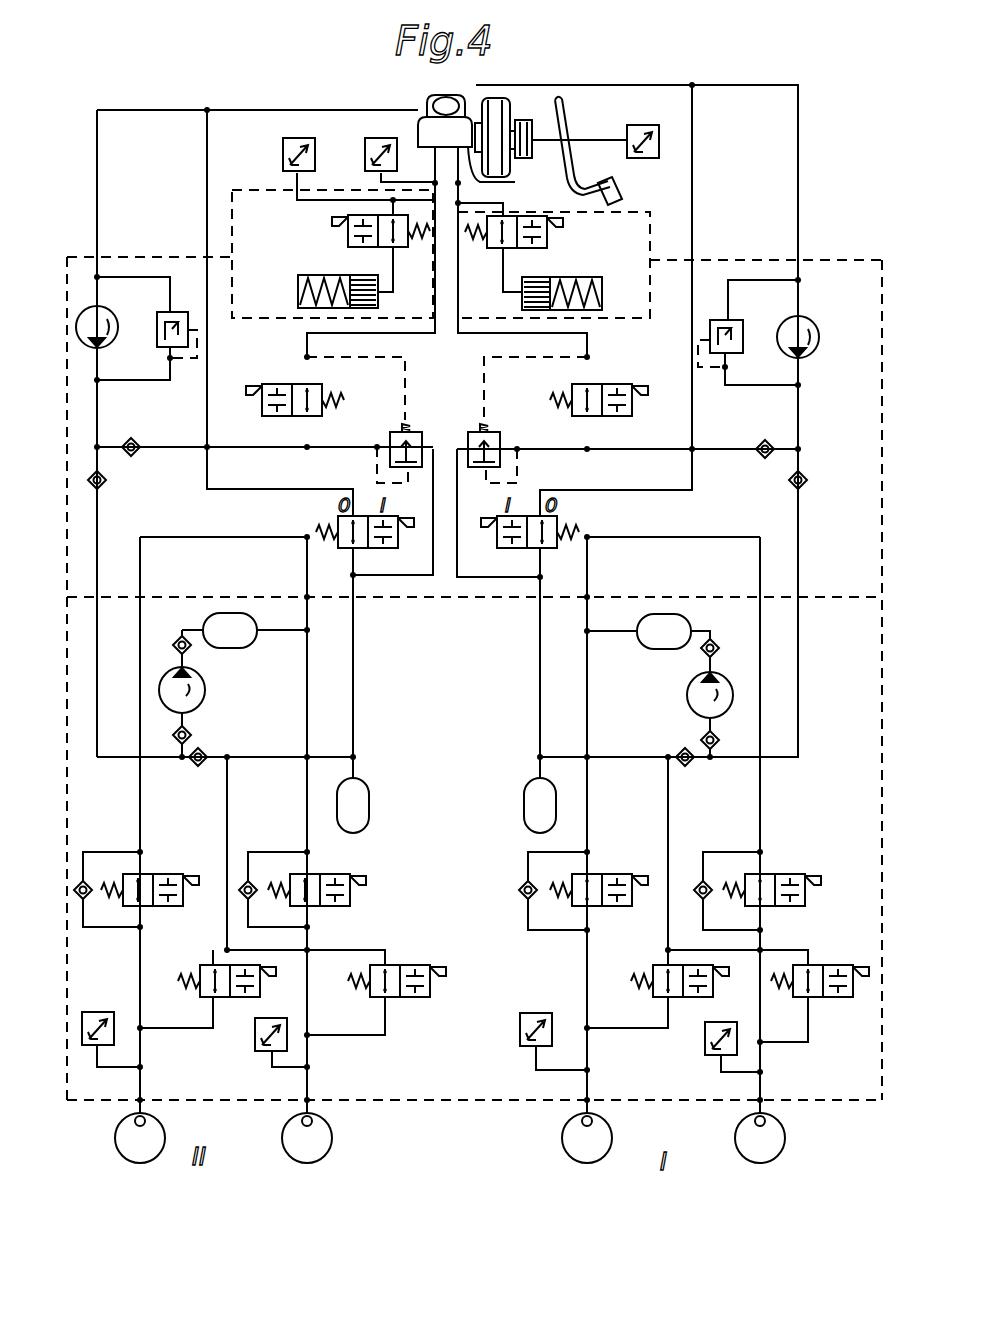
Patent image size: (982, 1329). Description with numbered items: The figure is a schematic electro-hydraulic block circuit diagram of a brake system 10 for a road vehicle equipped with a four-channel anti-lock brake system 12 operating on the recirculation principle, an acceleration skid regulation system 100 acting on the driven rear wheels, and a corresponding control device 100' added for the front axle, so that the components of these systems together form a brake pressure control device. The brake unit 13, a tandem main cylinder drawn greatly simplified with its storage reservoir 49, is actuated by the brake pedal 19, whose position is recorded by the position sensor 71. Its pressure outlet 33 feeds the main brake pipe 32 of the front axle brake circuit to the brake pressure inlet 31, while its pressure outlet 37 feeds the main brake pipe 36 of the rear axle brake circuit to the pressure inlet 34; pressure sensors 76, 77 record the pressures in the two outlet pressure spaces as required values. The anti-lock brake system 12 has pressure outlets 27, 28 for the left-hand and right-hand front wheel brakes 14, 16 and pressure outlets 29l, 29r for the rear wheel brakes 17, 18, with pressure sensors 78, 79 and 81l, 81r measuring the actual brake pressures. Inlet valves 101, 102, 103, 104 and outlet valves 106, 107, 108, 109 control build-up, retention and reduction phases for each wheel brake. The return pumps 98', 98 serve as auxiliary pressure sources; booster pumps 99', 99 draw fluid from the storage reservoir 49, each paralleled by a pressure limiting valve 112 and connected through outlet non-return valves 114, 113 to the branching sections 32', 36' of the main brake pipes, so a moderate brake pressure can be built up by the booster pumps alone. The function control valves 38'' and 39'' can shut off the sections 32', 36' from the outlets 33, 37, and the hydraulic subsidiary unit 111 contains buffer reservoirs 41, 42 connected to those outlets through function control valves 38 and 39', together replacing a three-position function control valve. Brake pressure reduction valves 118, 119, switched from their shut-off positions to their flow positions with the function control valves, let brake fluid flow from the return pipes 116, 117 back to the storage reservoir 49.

The brake system 10 is at (240, 100).
The anti-lock brake system 12 is at (463, 1078).
The brake unit 13 is at (416, 114).
The left-hand front wheel brake 14 is at (600, 1156).
The right-hand front wheel brake 16 is at (750, 1158).
The rear wheel brake 17 is at (152, 1156).
The rear wheel brake 18 is at (290, 1158).
The brake pedal 19 is at (597, 151).
The pressure outlet 27 is at (587, 1100).
The pressure outlet 28 is at (760, 1100).
The pressure outlet 29l is at (126, 1112).
The pressure outlet 29r is at (292, 1113).
The brake pressure inlet 31 is at (587, 597).
The main brake pipe 32 is at (522, 252).
The section of the main brake pipe 32' is at (562, 453).
The pressure outlet 33 is at (507, 146).
The pressure inlet 34 is at (307, 597).
The main brake pipe 36 is at (371, 252).
The section of the main brake pipe 36' is at (324, 454).
The pressure outlet 37 is at (407, 175).
The function control 3/3-way solenoid valve 38 is at (552, 234).
The function control valve 38'' is at (618, 413).
The 2/2-way solenoid valve 39' is at (349, 229).
The 2/2-way valve 39'' is at (278, 414).
The buffer reservoir 41 is at (600, 300).
The buffer reservoir 42 is at (292, 283).
The storage reservoir 49 is at (438, 96).
The position sensor 71 is at (630, 130).
The pressure sensor 76 is at (375, 142).
The pressure sensor 77 is at (297, 142).
The pressure sensor 78 is at (536, 1013).
The pressure sensor 79 is at (712, 1052).
The pressure sensor 81l is at (98, 1012).
The pressure sensor 81r is at (258, 1050).
The return pump 98 is at (221, 678).
The return pump 98' is at (676, 681).
The booster pump 99 is at (107, 345).
The booster pump 99' is at (820, 320).
The acceleration skid regulation system 100 is at (138, 257).
The control device 100' is at (794, 263).
The inlet valve 101 is at (620, 872).
The inlet valve 102 is at (800, 872).
The inlet valve 103 is at (174, 872).
The inlet valve 104 is at (345, 872).
The outlet valve 106 is at (656, 992).
The outlet valve 107 is at (816, 1000).
The outlet valve 108 is at (372, 992).
The outlet valve 109 is at (208, 965).
The hydraulic subsidiary unit 111 is at (642, 212).
The pressure limiting valve 112 is at (157, 330).
The outlet non-return valve 113 is at (134, 440).
The outlet non-return valve 114 is at (760, 442).
The return pipe 116 is at (538, 702).
The return pipe 117 is at (355, 710).
The brake pressure reduction valve 118 is at (517, 550).
The brake pressure reduction valve 119 is at (397, 540).